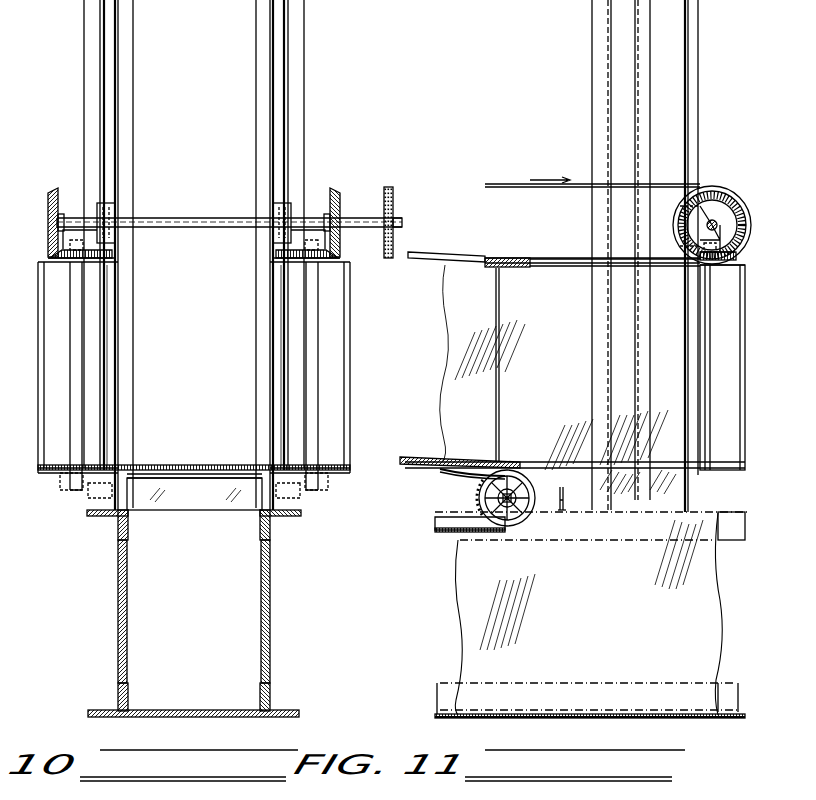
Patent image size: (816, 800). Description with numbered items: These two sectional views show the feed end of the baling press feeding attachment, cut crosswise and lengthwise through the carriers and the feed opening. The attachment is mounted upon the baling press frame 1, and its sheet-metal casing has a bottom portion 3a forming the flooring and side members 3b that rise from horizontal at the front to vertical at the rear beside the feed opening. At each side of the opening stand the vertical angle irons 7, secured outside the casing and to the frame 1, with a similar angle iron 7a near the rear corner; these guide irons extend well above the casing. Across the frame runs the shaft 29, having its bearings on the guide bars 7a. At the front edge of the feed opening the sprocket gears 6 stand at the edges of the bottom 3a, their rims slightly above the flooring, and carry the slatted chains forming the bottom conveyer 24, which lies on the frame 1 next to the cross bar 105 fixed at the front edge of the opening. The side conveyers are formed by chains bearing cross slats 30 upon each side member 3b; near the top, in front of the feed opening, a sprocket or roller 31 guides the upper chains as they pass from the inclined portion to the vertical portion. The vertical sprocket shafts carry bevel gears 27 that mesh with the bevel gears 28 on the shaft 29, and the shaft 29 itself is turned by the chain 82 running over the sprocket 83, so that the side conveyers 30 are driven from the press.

In FIG. 10, the baling press frame 1 is at (117, 531).
In FIG. 11, the baling press frame 1 is at (455, 540).
In FIG. 11, the bottom portion 3a is at (480, 472).
In FIG. 10, the side members 3b is at (109, 381).
In FIG. 11, the side members 3b is at (450, 422).
In FIG. 11, the sprocket gear 6 is at (480, 498).
In FIG. 10, the vertical angle iron 7 is at (89, 67).
In FIG. 10, the angle iron 7a is at (126, 44).
In FIG. 11, the angle iron 7a is at (694, 58).
In FIG. 10, the conveyer 24 is at (188, 467).
In FIG. 11, the conveyer 24 is at (476, 458).
In FIG. 10, the bevel gear 27 is at (50, 252).
In FIG. 10, the bevel gear 28 is at (48, 212).
In FIG. 11, the bevel gear 28 is at (727, 210).
In FIG. 10, the shaft 29 is at (187, 223).
In FIG. 11, the shaft 29 is at (718, 228).
In FIG. 10, the cross slats 30 is at (349, 365).
In FIG. 11, the cross slats 30 is at (498, 405).
In FIG. 11, the sprocket or roller 31 is at (503, 258).
In FIG. 10, the chain 82 is at (395, 198).
In FIG. 10, the sprocket 83 is at (393, 238).
In FIG. 11, the sprocket 83 is at (692, 216).
In FIG. 10, the cross bar 105 is at (222, 504).
In FIG. 11, the cross bar 105 is at (562, 496).